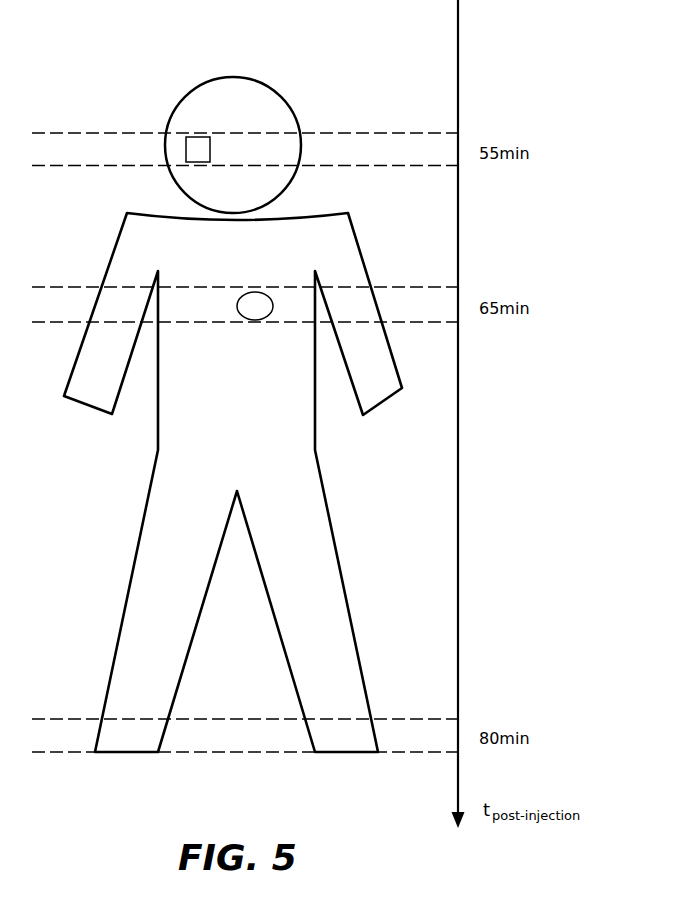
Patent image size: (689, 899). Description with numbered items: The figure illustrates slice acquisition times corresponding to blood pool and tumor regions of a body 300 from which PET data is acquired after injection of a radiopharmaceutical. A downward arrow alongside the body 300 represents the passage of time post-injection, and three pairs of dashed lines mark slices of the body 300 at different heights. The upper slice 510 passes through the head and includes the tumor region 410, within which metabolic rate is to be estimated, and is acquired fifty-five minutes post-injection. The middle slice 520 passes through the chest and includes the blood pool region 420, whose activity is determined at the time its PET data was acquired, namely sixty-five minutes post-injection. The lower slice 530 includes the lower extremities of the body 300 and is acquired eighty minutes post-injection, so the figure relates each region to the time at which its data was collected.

The body 300 is at (255, 76).
The tumor region 410 is at (200, 137).
The blood pool region 420 is at (262, 292).
The slice 510 is at (345, 133).
The slice 520 is at (383, 287).
The slice 530 is at (395, 718).